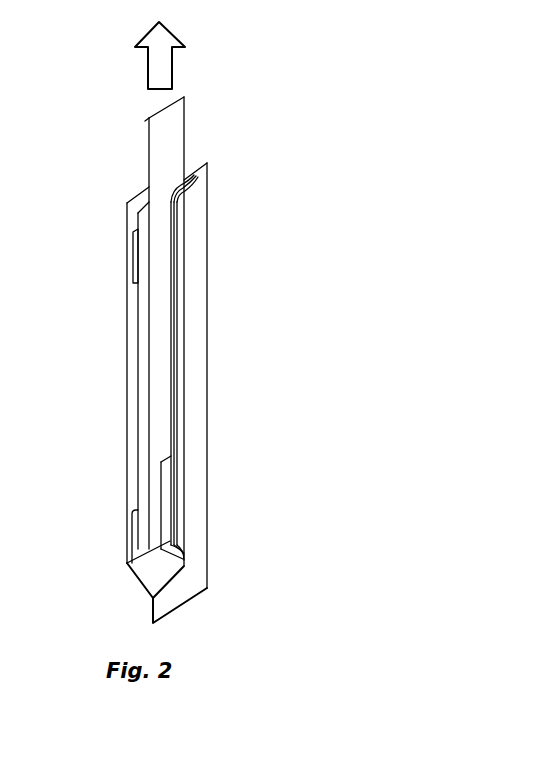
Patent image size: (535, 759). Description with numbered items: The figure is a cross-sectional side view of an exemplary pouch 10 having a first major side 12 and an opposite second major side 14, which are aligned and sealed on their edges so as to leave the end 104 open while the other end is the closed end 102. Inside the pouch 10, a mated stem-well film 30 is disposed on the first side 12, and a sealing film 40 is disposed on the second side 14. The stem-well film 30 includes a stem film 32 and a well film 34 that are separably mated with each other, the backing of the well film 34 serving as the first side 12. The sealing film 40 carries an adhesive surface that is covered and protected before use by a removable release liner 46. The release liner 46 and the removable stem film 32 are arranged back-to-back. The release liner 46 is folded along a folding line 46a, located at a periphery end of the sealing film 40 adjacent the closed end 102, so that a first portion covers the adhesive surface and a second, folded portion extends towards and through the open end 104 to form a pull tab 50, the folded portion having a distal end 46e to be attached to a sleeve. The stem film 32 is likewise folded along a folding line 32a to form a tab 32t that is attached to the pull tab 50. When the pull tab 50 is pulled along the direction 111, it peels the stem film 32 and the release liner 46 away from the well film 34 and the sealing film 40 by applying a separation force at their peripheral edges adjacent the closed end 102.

The pouch 10 is at (208, 362).
The first major side 12 is at (202, 326).
The second major side 14 is at (127, 372).
The stem-well film 30 is at (184, 290).
The stem film 32 is at (216, 384).
The folding line 32a is at (185, 560).
The tab 32t is at (161, 498).
The well film 34 is at (173, 432).
The sealing film 40 is at (138, 317).
The release liner 46 is at (143, 437).
The folding line 46a is at (133, 562).
The distal end 46e is at (146, 116).
The pull tab 50 is at (157, 155).
The closed end 102 is at (186, 603).
The open end 104 is at (188, 183).
The direction 111 is at (168, 36).